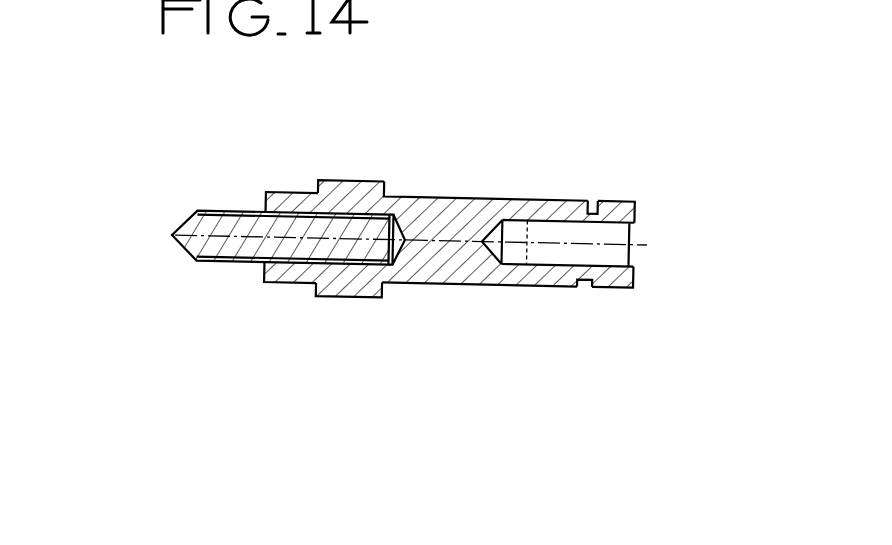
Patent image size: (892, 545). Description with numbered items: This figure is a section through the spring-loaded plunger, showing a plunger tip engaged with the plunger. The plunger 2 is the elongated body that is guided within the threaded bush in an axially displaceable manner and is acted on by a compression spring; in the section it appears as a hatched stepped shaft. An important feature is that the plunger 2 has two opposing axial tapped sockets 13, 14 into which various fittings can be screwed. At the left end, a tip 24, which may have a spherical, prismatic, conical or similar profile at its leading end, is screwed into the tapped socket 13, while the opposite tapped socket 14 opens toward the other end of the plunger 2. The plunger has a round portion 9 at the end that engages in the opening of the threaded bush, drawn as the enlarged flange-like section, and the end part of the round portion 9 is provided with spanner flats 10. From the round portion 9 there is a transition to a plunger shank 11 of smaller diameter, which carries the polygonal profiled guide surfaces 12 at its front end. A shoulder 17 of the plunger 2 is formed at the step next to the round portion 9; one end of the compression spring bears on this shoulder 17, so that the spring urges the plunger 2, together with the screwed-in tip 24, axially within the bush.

The plunger 2 is at (490, 201).
The round portion 9 is at (350, 288).
The spanner flats 10 is at (292, 283).
The plunger shank 11 is at (443, 263).
The polygonal profiled guide surfaces 12 is at (560, 285).
The tapped socket 13 is at (263, 205).
The tapped socket 14 is at (622, 233).
The shoulder 17 is at (383, 188).
The tip 24 is at (175, 237).